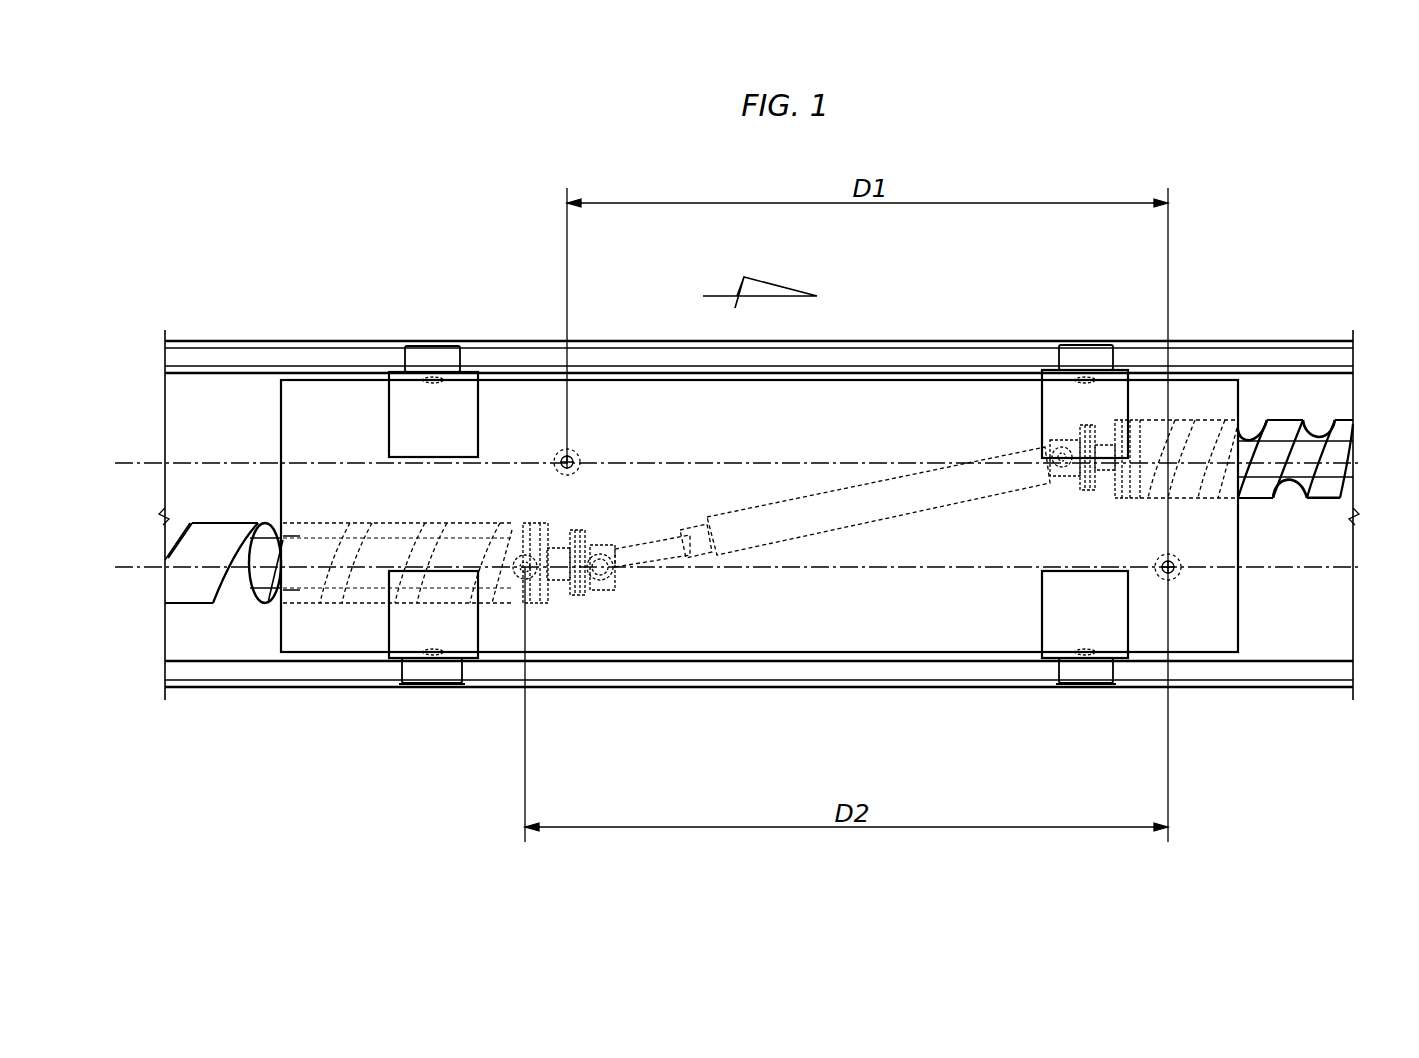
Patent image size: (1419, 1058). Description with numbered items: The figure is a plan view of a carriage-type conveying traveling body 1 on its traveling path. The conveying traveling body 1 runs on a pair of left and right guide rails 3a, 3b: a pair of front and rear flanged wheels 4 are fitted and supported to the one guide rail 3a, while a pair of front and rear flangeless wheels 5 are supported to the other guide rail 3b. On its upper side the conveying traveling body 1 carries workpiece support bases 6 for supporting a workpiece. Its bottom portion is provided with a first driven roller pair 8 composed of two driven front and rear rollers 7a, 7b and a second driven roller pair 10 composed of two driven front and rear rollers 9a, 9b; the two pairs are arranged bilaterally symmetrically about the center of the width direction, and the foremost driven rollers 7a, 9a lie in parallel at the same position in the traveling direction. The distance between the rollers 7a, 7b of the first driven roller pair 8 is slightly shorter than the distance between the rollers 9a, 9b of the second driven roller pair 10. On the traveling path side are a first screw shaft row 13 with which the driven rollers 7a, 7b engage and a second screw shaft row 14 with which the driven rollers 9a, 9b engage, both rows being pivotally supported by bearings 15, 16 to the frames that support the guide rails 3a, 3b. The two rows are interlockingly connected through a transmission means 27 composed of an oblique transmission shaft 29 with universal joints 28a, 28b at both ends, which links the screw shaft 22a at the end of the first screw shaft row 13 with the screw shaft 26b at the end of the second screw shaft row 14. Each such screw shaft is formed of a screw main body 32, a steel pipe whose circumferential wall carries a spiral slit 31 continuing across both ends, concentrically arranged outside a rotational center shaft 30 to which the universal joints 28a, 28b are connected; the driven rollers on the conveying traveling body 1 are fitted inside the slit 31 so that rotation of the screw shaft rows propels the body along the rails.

The conveying traveling body 1 is at (746, 430).
The guide rail 3a is at (277, 678).
The guide rail 3b is at (310, 358).
The flanged wheels 4 is at (437, 670).
The flangeless wheels 5 is at (437, 360).
The workpiece support bases 6 is at (394, 405).
The driven roller 7a is at (1175, 455).
The driven roller 7b is at (583, 460).
The first driven roller pair 8 is at (556, 445).
The driven roller 9a is at (1180, 573).
The driven roller 9b is at (530, 580).
The second driven roller pair 10 is at (1177, 590).
The first screw shaft row 13 is at (1285, 412).
The second screw shaft row 14 is at (222, 606).
The bearing 15 is at (1140, 495).
The bearing 16 is at (545, 558).
The screw shaft 22a is at (1260, 500).
The screw shaft 26b is at (215, 520).
The transmission means 27 is at (824, 545).
The universal joint 28a is at (1060, 470).
The universal joint 28b is at (606, 580).
The oblique transmission shaft 29 is at (863, 498).
The rotational center shaft 30 is at (272, 555).
The spiral slit 31 is at (270, 520).
The screw main body 32 is at (190, 590).